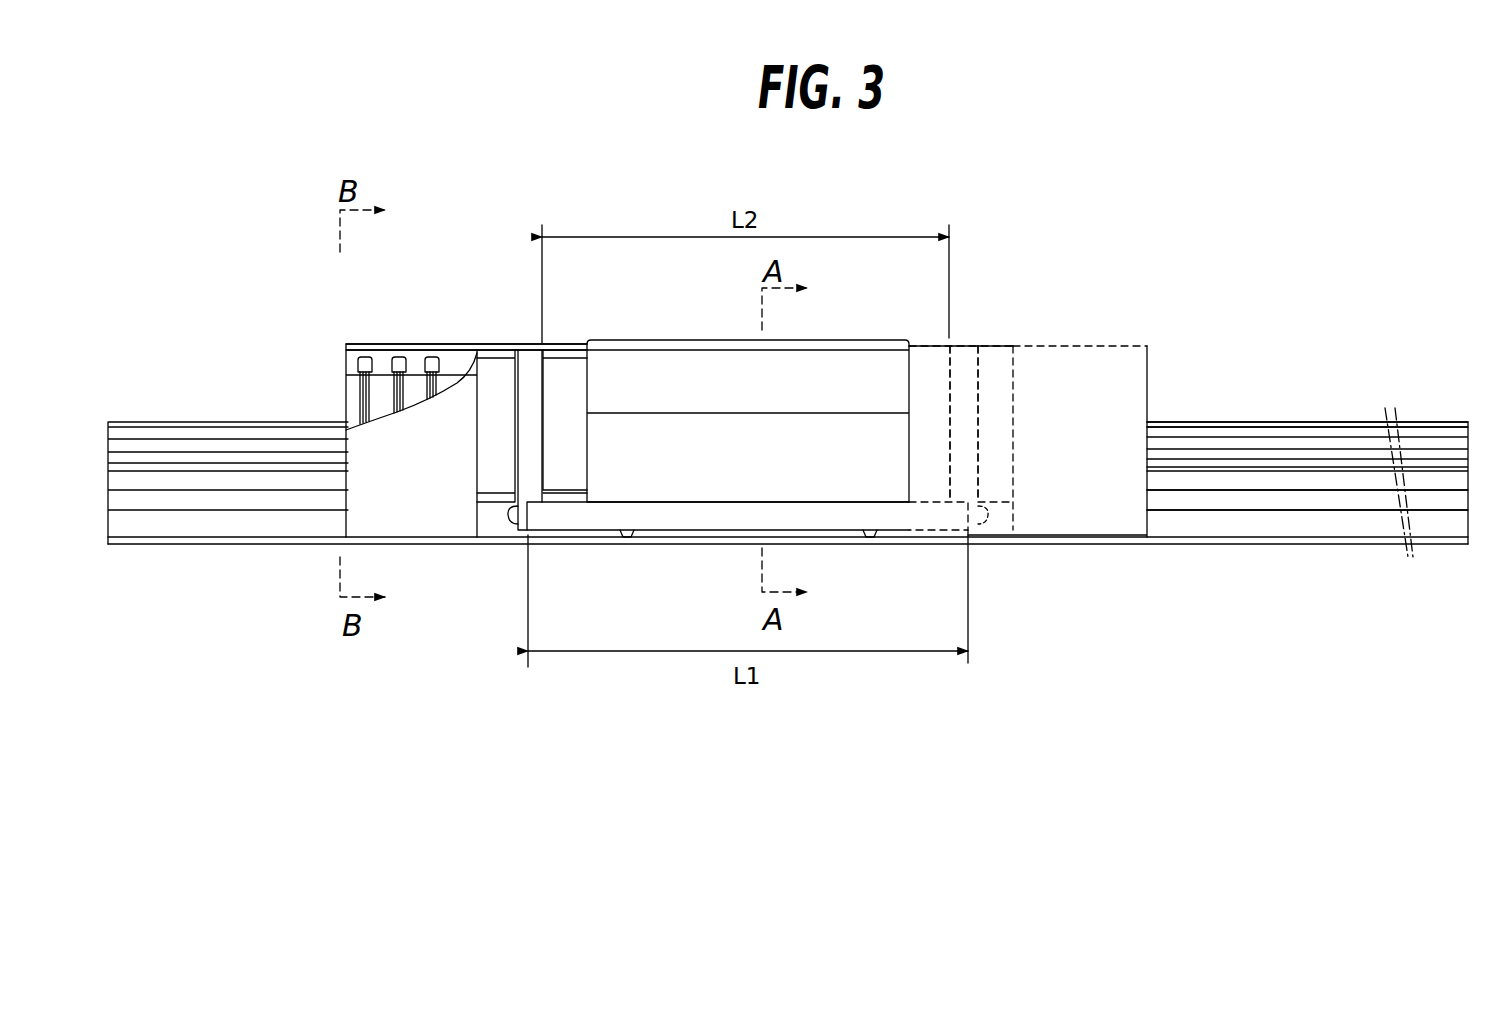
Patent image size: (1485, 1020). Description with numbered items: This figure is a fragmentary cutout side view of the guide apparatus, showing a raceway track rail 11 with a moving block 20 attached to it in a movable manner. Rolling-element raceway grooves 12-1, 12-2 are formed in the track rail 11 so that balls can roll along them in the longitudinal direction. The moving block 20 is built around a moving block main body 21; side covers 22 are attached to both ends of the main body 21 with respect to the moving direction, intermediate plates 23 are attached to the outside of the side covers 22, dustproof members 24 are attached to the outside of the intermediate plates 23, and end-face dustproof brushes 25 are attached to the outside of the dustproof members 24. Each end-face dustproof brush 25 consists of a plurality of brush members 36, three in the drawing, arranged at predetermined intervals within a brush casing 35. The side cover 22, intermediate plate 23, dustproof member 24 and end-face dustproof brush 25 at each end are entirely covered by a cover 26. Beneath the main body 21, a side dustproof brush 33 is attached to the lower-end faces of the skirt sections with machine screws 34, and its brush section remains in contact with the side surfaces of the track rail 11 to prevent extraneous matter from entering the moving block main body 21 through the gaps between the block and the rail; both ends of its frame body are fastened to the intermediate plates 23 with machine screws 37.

The raceway track rail 11 is at (1316, 417).
The rolling-element raceway groove 12-1 is at (1225, 432).
The rolling-element raceway groove 12-2 is at (1225, 455).
The moving block 20 is at (748, 374).
The moving block main body 21 is at (861, 360).
The side cover 22 is at (570, 370).
The intermediate plate 23 is at (530, 370).
The dustproof member 24 is at (498, 370).
The end-face dustproof brush 25 is at (433, 368).
The cover 26 is at (398, 368).
The side dustproof brush 33 is at (575, 515).
The machine screw 34 is at (626, 535).
The brush casing 35 is at (380, 366).
The brush member 36 is at (358, 364).
The machine screw 37 is at (505, 527).